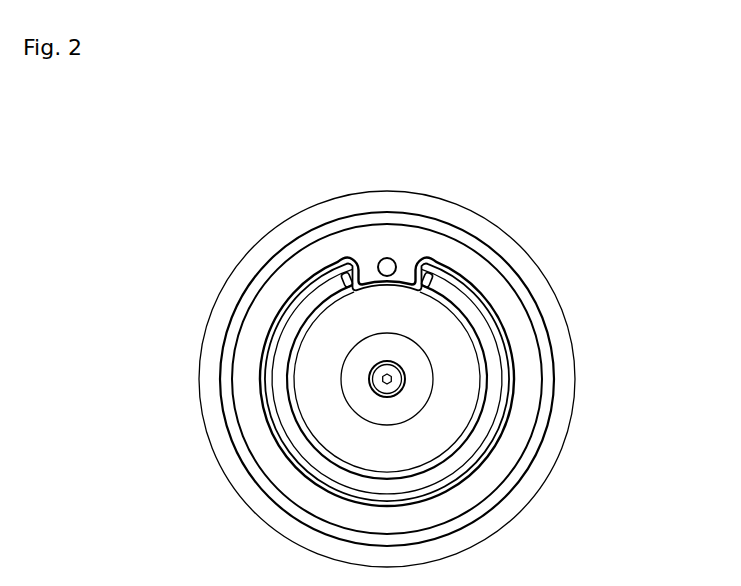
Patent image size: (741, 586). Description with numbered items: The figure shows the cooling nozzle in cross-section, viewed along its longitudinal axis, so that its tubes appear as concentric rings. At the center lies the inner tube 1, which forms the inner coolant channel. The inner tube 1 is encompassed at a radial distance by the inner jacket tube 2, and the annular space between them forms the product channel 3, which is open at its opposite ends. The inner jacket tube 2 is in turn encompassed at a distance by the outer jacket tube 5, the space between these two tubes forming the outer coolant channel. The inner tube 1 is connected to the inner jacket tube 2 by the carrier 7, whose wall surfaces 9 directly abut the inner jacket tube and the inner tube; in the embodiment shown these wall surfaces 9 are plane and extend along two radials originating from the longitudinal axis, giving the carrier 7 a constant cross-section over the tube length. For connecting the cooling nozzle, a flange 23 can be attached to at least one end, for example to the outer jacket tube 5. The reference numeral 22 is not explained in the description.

The inner tube 1 is at (483, 335).
The inner jacket tube 2 is at (505, 304).
The product channel 3 is at (507, 368).
The outer jacket tube 5 is at (497, 250).
The carrier 7 is at (363, 257).
The wall surfaces 9 is at (334, 268).
The central hub 22 is at (309, 364).
The flange 23 is at (486, 208).